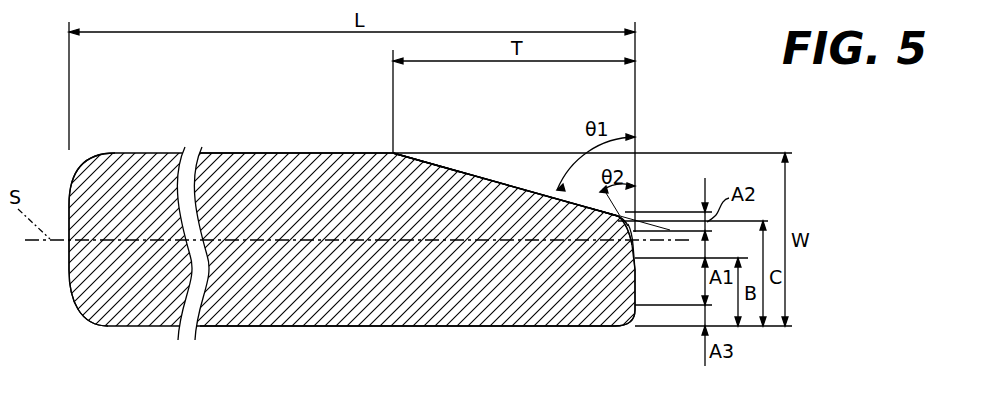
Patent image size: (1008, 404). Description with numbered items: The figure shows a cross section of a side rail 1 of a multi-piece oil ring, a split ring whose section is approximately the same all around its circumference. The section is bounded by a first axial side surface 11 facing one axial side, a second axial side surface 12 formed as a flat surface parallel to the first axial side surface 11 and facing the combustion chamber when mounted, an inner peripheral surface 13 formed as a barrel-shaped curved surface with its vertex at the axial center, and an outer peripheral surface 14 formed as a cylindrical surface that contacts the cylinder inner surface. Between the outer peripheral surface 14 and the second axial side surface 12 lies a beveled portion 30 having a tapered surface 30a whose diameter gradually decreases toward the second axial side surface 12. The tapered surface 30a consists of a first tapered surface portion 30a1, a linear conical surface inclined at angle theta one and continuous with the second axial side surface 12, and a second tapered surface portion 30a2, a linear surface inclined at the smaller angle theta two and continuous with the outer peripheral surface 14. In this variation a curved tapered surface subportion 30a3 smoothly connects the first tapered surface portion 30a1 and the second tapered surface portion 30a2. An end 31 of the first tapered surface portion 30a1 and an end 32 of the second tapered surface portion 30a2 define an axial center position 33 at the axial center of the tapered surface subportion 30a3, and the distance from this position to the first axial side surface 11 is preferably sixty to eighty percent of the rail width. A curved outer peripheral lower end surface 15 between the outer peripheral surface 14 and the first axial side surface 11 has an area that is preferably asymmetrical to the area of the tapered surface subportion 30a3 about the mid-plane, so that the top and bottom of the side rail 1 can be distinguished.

The side rail 1 is at (653, 94).
The first axial side surface 11 is at (318, 327).
The second axial side surface 12 is at (325, 154).
The inner peripheral surface 13 is at (69, 256).
The outer peripheral surface 14 is at (636, 291).
The outer peripheral lower end surface 15 is at (633, 320).
The beveled portion 30 is at (484, 148).
The tapered surface 30a is at (514, 169).
The first tapered surface portion 30a1 is at (446, 168).
The second tapered surface portion 30a2 is at (634, 247).
The tapered surface subportion 30a3 is at (628, 210).
The end 31 is at (617, 215).
The end 32 is at (633, 235).
The axial center position 33 is at (622, 214).